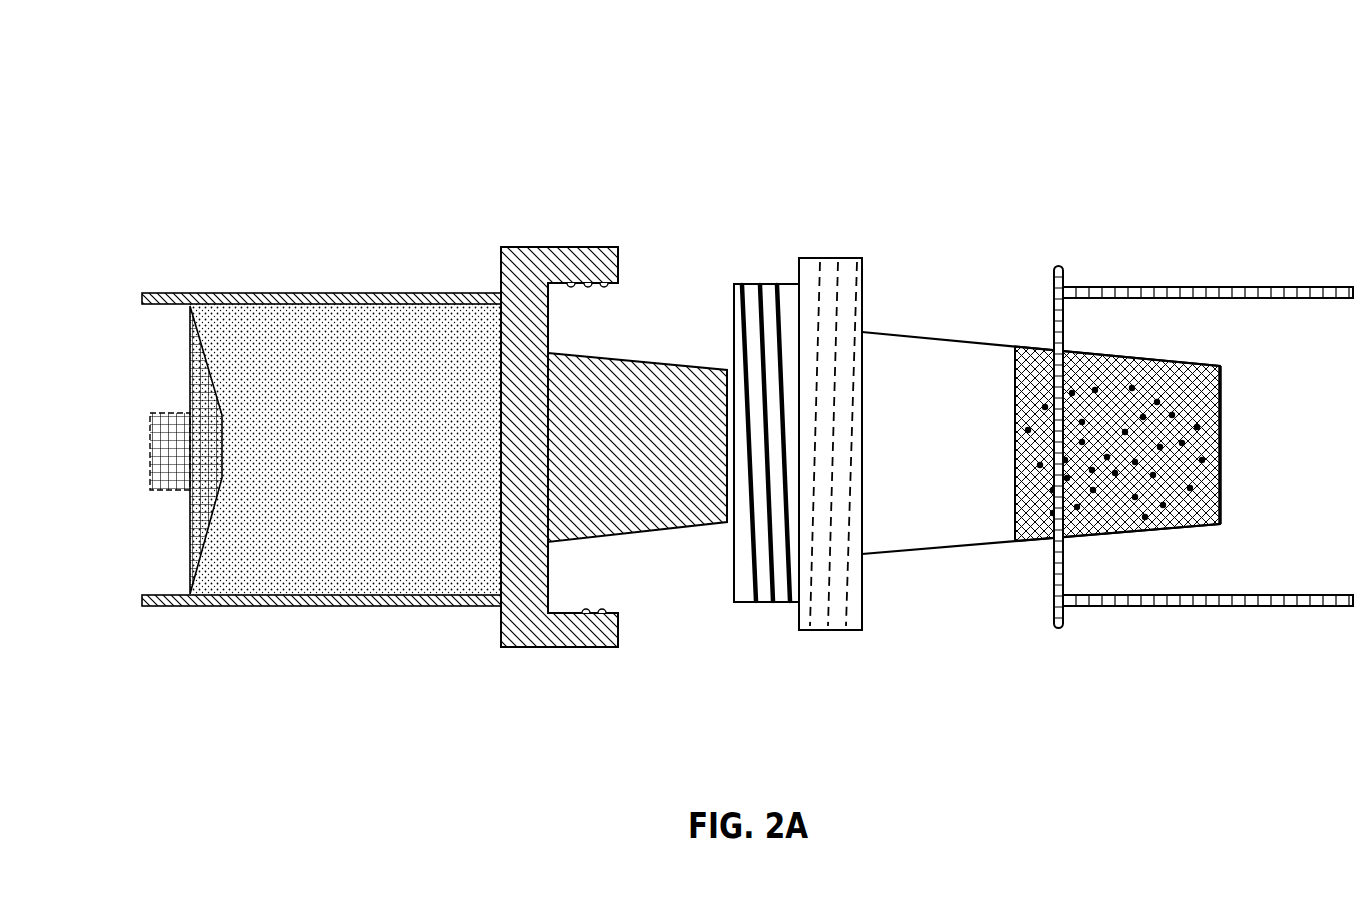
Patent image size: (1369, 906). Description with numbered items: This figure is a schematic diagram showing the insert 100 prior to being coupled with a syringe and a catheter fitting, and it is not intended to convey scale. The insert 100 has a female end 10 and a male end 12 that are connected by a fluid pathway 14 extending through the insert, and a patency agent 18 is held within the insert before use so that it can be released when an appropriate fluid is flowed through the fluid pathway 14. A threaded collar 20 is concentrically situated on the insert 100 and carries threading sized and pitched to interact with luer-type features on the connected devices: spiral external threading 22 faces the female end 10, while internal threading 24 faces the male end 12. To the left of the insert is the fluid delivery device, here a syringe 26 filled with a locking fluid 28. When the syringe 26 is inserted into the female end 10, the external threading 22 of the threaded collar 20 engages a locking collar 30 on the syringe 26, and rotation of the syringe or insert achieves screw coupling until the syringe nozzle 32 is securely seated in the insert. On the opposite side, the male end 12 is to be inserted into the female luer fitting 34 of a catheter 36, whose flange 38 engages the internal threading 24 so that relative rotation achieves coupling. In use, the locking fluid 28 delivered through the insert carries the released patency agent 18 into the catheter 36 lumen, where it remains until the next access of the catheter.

The insert 100 is at (877, 140).
The female end 10 is at (717, 583).
The male end 12 is at (1250, 441).
The fluid pathway 14 is at (919, 455).
The patency agent 18 is at (1140, 388).
The threaded collar 20 is at (813, 258).
The external threading 22 is at (759, 283).
The internal threading 24 is at (841, 262).
The syringe 26 is at (210, 283).
The locking fluid 28 is at (346, 465).
The locking collar 30 is at (508, 247).
The syringe nozzle 32 is at (622, 536).
The female luer fitting 34 is at (1038, 319).
The catheter 36 is at (1220, 289).
The flange 38 is at (1066, 275).